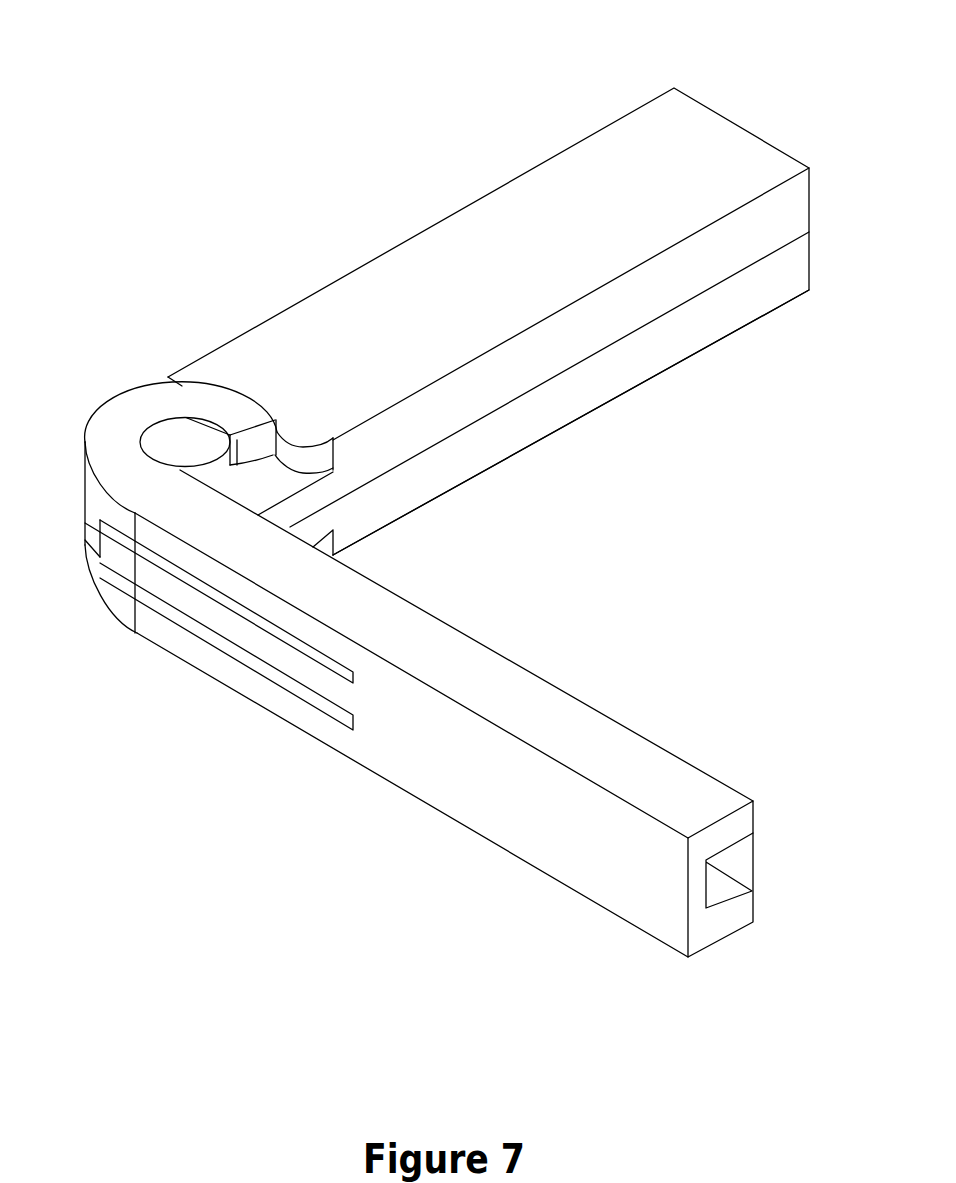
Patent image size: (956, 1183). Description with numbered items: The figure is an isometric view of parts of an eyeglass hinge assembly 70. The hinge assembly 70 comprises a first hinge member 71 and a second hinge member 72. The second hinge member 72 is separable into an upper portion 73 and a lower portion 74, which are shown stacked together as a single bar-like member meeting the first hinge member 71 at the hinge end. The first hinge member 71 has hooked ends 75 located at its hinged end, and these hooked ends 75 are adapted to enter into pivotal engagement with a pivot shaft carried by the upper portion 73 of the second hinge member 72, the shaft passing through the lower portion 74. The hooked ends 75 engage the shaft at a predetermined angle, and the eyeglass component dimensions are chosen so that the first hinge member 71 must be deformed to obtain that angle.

The eyeglass hinge assembly 70 is at (218, 81).
The first hinge member 71 is at (449, 797).
The second hinge member 72 is at (626, 426).
The upper portion 73 is at (571, 200).
The lower portion 74 is at (718, 317).
The hooked ends 75 is at (158, 434).